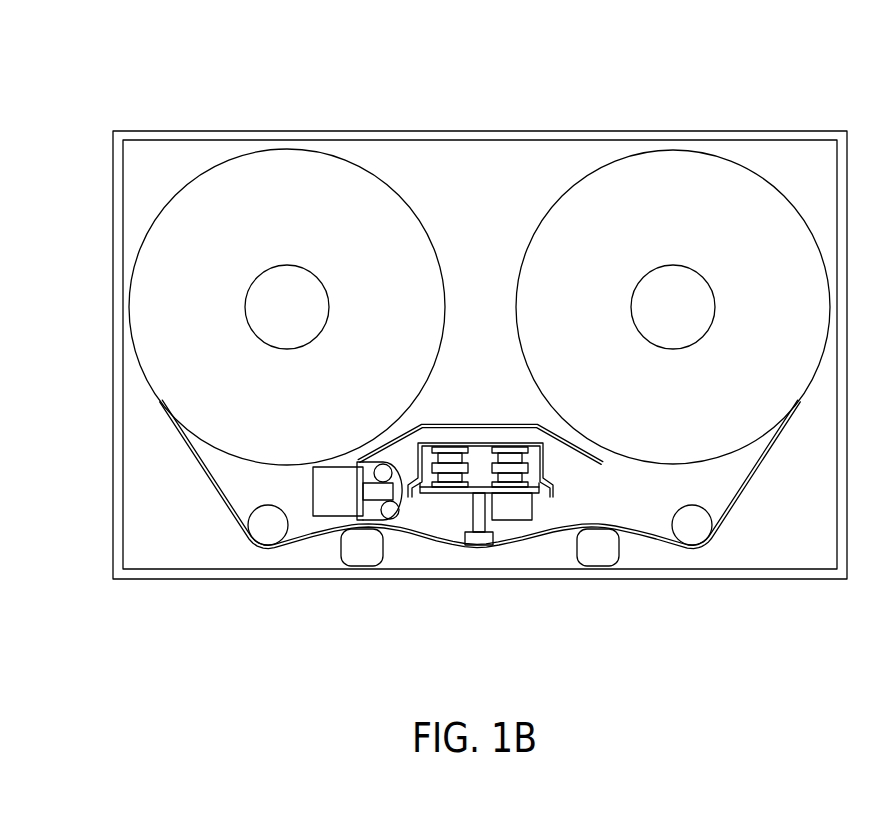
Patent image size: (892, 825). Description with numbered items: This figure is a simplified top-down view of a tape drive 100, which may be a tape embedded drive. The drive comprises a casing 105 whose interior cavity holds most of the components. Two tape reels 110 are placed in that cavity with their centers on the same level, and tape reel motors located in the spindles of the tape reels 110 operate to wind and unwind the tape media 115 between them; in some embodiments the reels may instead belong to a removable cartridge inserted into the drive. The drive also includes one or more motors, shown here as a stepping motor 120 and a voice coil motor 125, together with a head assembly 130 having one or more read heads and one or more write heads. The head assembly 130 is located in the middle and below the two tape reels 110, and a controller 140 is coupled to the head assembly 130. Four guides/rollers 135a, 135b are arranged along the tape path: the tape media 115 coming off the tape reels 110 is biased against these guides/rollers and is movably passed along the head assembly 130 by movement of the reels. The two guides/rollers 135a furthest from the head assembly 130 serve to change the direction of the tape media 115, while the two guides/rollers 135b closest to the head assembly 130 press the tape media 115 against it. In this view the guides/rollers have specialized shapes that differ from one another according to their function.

The tape drive 100 is at (108, 58).
The casing 105 is at (512, 130).
The tape reels 110 is at (272, 148).
The tape media 115 is at (213, 488).
The stepping motor 120 is at (318, 516).
The voice coil motor 125 is at (453, 494).
The head assembly 130 is at (478, 548).
The guides/rollers 135a is at (266, 528).
The guides/rollers 135b is at (362, 553).
The controller 140 is at (510, 522).